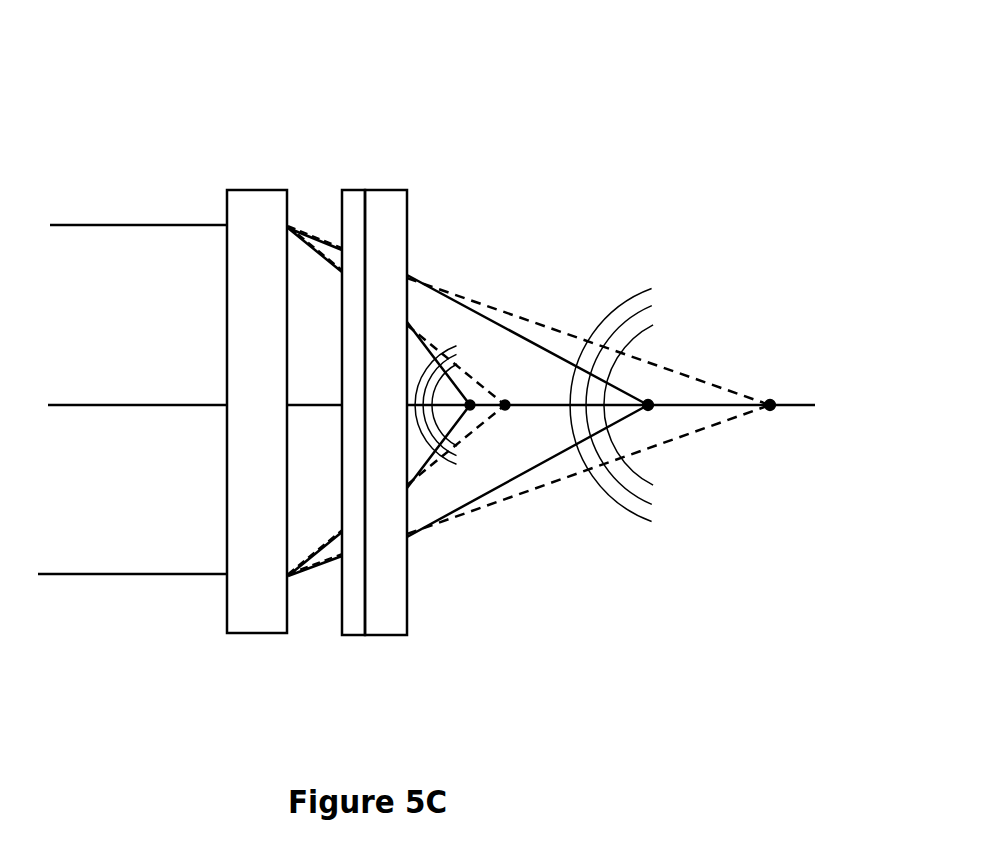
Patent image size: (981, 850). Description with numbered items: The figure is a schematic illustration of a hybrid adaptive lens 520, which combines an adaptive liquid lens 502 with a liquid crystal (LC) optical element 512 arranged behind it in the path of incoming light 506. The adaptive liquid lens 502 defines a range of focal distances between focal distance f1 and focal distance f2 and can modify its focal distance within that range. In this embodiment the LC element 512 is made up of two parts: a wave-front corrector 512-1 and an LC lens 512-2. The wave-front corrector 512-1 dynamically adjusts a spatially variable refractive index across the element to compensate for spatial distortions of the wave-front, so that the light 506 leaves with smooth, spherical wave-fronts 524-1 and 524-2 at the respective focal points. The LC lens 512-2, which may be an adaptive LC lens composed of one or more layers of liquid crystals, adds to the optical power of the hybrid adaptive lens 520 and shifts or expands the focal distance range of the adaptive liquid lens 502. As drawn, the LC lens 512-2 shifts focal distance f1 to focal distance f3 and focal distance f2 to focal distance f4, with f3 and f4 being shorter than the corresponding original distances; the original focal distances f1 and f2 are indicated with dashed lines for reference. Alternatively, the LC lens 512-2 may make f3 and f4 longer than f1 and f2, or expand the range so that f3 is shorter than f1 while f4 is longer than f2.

The hybrid adaptive lens 520 is at (167, 69).
The adaptive liquid lens 502 is at (250, 188).
The light 506 is at (149, 226).
The LC optical element 512 is at (360, 405).
The wave-front corrector 512-1 is at (380, 190).
The LC lens 512-2 is at (355, 190).
The wave-front 524-1 is at (462, 337).
The wave-front 524-2 is at (648, 272).
The focal distance f1 is at (506, 408).
The focal distance f2 is at (772, 408).
The focal distance f3 is at (472, 408).
The focal distance f4 is at (650, 408).